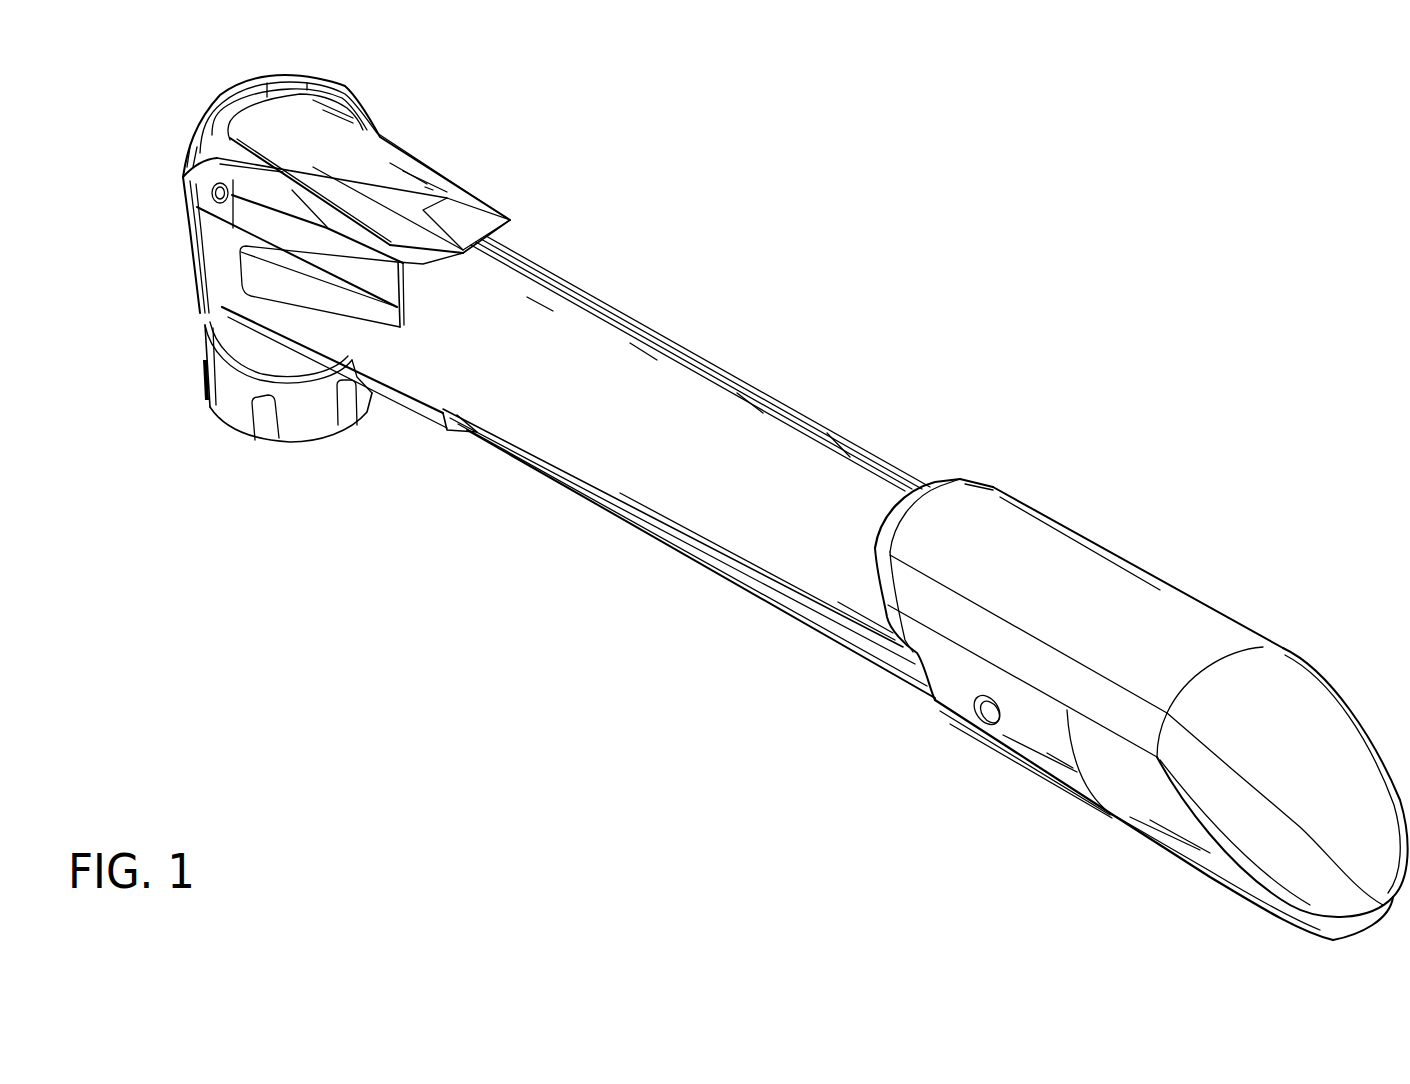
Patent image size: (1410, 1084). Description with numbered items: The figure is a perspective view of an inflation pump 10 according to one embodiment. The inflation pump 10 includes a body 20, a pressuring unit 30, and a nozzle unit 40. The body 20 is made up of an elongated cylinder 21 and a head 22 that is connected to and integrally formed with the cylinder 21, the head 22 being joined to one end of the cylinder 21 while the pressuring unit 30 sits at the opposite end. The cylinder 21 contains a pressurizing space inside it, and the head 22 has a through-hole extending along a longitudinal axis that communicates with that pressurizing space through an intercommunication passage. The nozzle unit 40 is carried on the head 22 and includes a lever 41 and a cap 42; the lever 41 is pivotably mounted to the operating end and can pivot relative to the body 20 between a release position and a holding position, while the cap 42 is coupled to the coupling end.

The inflation pump 10 is at (907, 255).
The body 20 is at (715, 295).
The cylinder 21 is at (722, 418).
The head 22 is at (222, 335).
The pressuring unit 30 is at (1213, 579).
The nozzle unit 40 is at (447, 136).
The lever 41 is at (418, 184).
The cap 42 is at (308, 417).